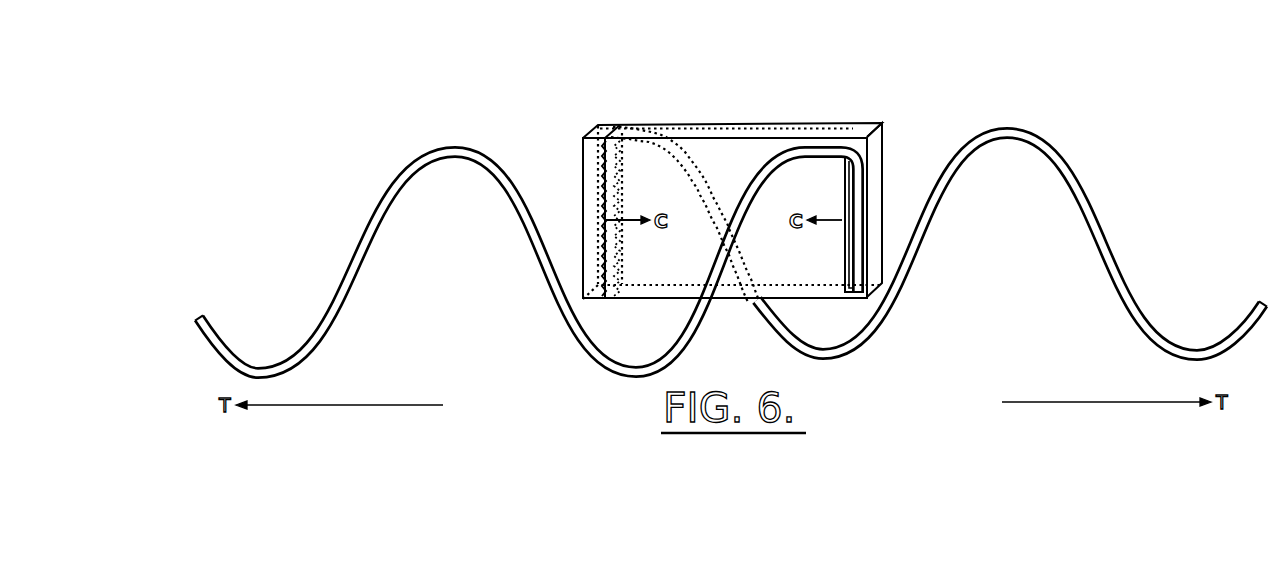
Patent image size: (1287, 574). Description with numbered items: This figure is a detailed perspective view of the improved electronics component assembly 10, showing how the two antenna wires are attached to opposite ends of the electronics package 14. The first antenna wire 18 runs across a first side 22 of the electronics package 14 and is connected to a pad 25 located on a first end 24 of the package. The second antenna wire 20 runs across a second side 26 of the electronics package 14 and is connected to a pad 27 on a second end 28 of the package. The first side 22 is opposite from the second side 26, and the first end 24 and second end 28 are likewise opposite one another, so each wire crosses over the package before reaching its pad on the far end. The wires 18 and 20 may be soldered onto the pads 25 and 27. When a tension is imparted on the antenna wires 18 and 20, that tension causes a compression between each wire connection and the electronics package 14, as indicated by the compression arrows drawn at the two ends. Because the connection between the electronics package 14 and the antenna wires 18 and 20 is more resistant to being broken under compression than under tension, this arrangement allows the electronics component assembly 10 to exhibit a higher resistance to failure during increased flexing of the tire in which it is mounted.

The electronics component assembly 10 is at (693, 186).
The electronics package 14 is at (603, 217).
The first antenna wire 18 is at (375, 212).
The second antenna wire 20 is at (1100, 227).
The first side 22 is at (732, 238).
The first end 24 is at (837, 173).
The pad 25 is at (877, 158).
The second side 26 is at (706, 168).
The pad 27 is at (582, 157).
The second end 28 is at (613, 127).